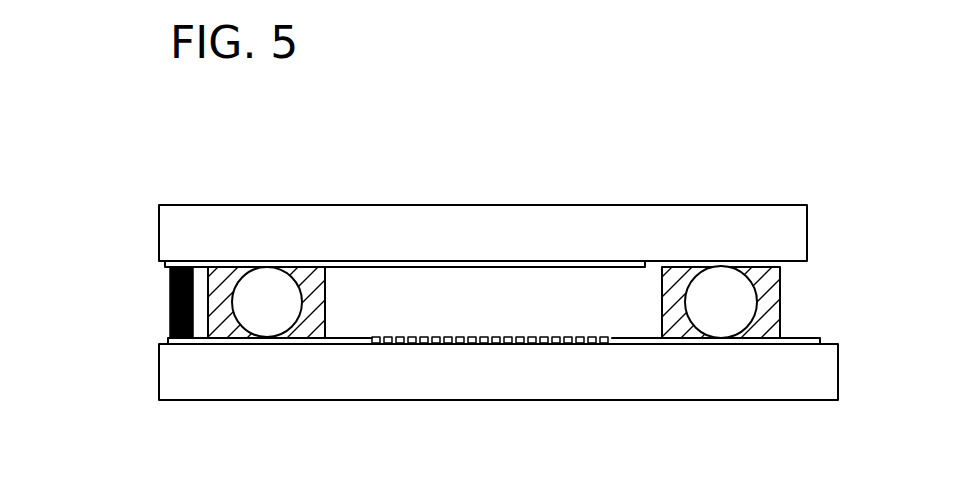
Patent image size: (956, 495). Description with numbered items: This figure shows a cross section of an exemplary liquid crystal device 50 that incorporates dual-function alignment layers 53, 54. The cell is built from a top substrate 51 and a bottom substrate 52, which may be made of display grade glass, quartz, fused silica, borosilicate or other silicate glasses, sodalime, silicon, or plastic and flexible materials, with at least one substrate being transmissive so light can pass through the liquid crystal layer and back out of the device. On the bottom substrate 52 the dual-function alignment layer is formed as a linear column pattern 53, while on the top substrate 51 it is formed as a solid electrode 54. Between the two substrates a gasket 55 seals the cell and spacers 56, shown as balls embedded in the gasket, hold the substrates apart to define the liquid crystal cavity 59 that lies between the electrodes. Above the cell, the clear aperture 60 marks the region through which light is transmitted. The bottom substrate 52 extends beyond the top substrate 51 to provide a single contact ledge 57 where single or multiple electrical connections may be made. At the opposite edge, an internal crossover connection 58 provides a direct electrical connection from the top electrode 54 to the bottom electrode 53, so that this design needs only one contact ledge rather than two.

The liquid crystal device 50 is at (668, 106).
The top substrate 51 is at (158, 232).
The bottom substrate 52 is at (158, 375).
The dual-function alignment layer / linear column pattern 53 is at (503, 338).
The dual-function alignment layer / solid electrode 54 is at (497, 267).
The gasket 55 is at (780, 302).
The spacers 56 is at (754, 277).
The contact ledge 57 is at (810, 337).
The internal crossover connection 58 is at (170, 300).
The liquid crystal cavity 59 is at (436, 304).
The clear aperture 60 is at (605, 192).